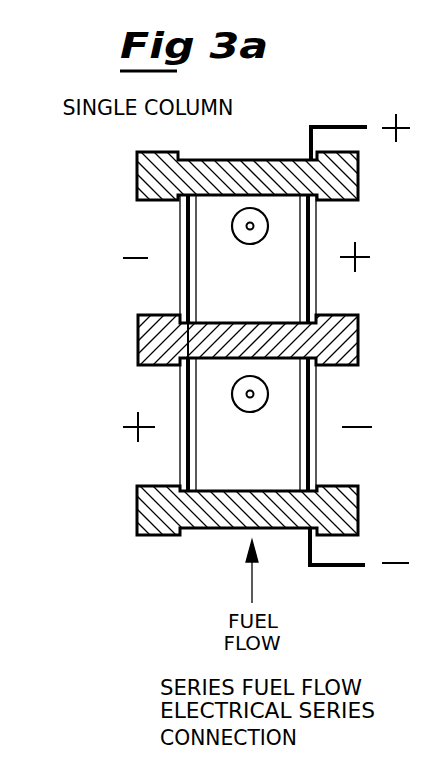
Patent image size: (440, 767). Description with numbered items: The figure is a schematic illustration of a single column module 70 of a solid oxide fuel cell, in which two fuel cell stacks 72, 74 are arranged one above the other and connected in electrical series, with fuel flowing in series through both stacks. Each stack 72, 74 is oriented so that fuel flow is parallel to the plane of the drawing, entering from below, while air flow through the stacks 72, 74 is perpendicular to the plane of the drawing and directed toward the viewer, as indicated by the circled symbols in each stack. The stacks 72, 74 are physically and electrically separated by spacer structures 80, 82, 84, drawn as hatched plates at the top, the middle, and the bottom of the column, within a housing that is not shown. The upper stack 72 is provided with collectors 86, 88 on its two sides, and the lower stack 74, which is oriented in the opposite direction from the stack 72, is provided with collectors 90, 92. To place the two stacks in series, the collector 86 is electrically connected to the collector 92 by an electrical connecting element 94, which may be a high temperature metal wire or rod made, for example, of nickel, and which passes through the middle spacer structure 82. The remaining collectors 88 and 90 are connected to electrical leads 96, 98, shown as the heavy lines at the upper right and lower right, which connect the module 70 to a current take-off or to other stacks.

The single column module 70 is at (103, 194).
The fuel cell stack 72 is at (202, 227).
The fuel cell stack 74 is at (205, 382).
The spacer structure 80 is at (358, 167).
The spacer structure 82 is at (356, 340).
The spacer structure 84 is at (358, 510).
The collector 86 is at (183, 287).
The collector 88 is at (312, 290).
The collector 90 is at (317, 401).
The collector 92 is at (188, 462).
The electrical connecting element 94 is at (187, 336).
The electrical lead 96 is at (341, 125).
The electrical lead 98 is at (338, 567).